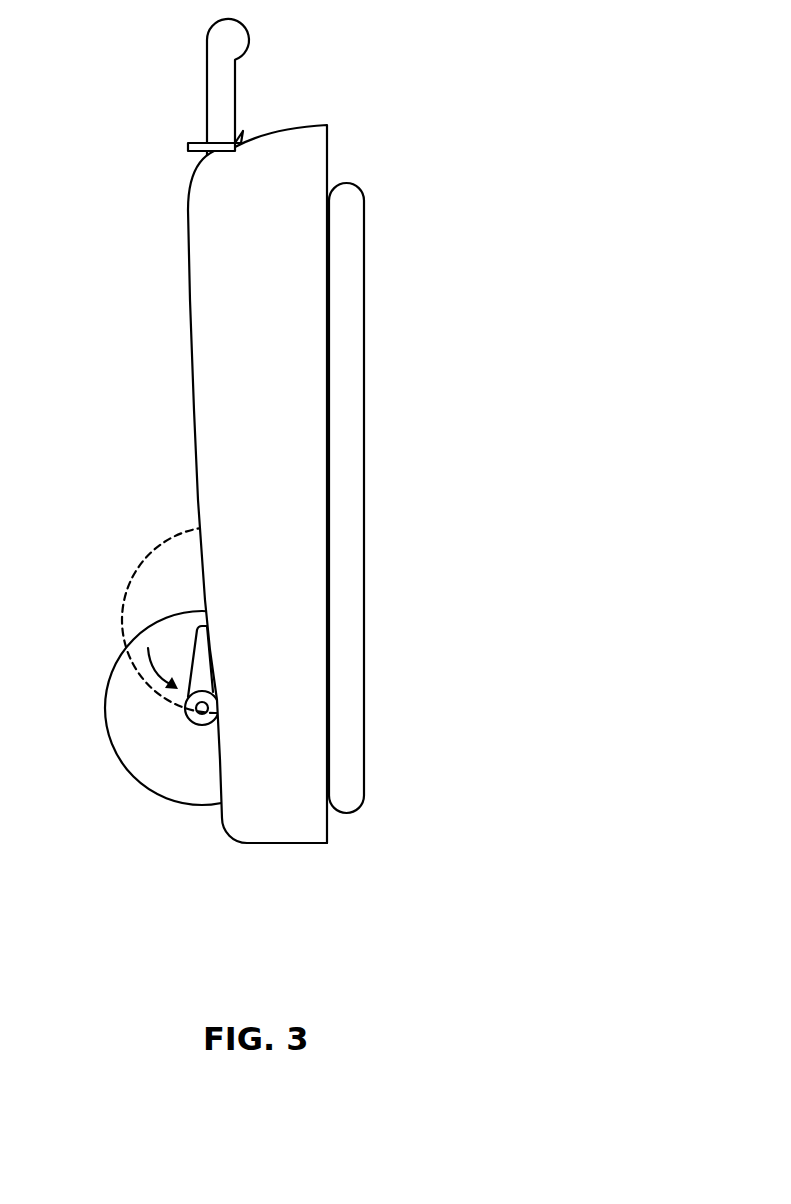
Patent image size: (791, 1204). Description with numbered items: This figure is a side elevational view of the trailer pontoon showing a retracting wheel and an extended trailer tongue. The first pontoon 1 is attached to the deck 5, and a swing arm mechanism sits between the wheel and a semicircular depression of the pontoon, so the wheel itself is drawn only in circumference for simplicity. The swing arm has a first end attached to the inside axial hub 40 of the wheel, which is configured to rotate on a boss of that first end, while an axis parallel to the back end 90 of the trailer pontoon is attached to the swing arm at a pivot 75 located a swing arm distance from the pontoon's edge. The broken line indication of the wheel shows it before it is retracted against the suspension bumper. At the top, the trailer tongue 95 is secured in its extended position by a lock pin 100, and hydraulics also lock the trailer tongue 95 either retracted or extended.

The first pontoon 1 is at (261, 286).
The deck 5 is at (347, 417).
The inside axial hub 40 is at (187, 715).
The pivot 75 is at (225, 598).
The back end 90 is at (310, 830).
The trailer tongue 95 is at (223, 85).
The lock pin 100 is at (228, 148).